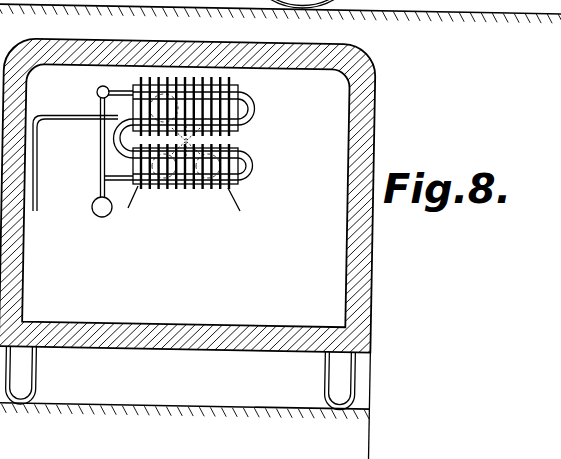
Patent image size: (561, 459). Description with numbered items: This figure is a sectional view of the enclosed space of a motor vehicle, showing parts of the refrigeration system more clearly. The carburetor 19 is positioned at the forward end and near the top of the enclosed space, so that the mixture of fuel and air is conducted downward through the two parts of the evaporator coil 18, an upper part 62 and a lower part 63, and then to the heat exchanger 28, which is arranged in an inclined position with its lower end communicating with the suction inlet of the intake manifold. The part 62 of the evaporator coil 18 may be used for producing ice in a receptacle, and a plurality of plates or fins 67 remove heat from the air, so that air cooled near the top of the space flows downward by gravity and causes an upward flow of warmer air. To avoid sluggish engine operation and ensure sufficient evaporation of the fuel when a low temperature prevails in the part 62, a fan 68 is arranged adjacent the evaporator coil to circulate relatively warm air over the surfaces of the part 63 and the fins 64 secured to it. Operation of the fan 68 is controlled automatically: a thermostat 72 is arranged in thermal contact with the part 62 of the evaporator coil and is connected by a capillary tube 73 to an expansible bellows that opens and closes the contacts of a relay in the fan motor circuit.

The evaporator coil 18 is at (238, 140).
The carburetor 19 is at (99, 88).
The heat exchanger 28 is at (95, 217).
The part of the evaporator coil 62 is at (258, 107).
The part of the evaporator coil 63 is at (259, 167).
The fins 64 is at (234, 173).
The plates or fins 67 is at (240, 84).
The fan 68 is at (212, 170).
The thermostat 72 is at (120, 116).
The capillary tube 73 is at (38, 177).